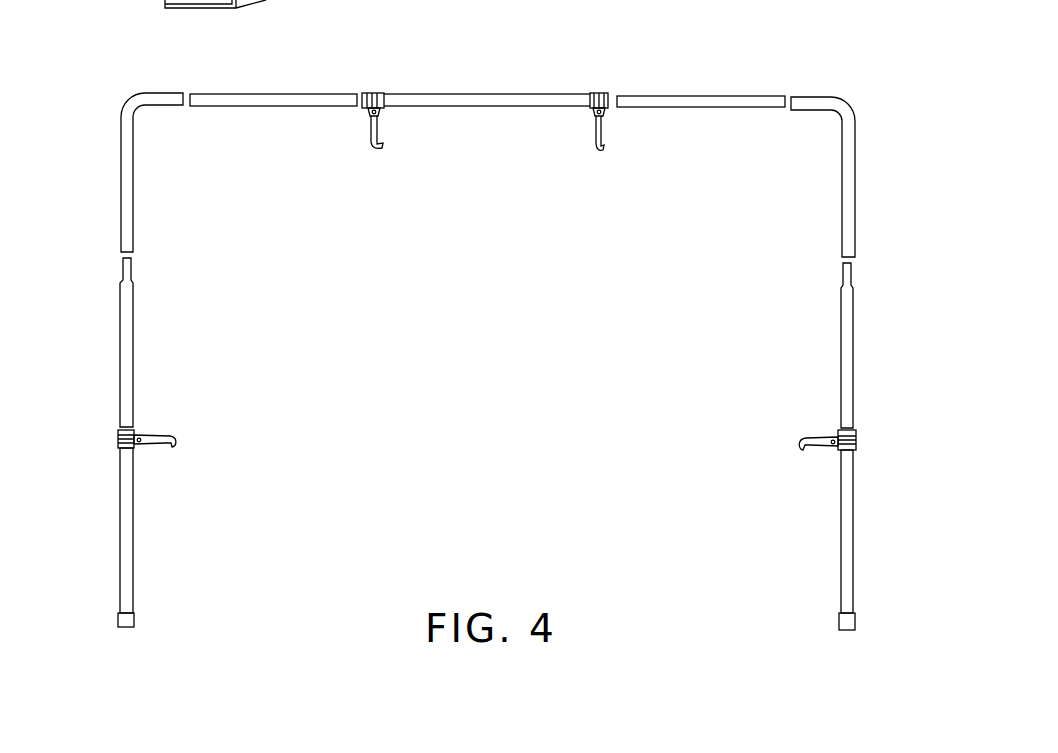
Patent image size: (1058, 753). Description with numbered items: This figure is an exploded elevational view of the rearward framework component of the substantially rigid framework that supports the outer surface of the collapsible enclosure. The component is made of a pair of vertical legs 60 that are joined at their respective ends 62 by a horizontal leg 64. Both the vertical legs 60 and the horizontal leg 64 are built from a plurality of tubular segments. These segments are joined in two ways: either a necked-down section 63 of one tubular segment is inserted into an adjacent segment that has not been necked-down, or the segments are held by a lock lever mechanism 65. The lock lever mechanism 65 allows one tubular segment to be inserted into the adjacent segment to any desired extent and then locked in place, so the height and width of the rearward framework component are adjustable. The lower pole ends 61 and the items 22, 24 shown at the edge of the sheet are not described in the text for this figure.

The container 22 is at (295, 0).
The lid 24 is at (429, 4).
The vertical legs 60 is at (113, 210).
The leg pole 61 is at (130, 628).
The ends of the vertical legs 62 is at (126, 110).
The necked-down section 63 is at (132, 268).
The horizontal leg 64 is at (687, 92).
The lock lever mechanism 65 is at (373, 93).